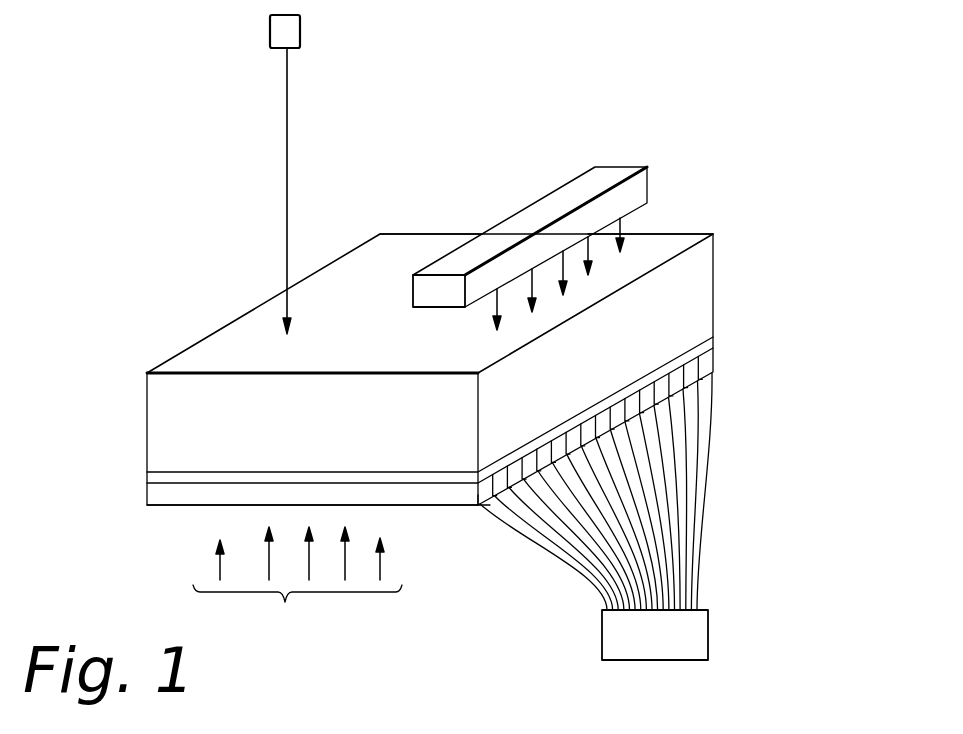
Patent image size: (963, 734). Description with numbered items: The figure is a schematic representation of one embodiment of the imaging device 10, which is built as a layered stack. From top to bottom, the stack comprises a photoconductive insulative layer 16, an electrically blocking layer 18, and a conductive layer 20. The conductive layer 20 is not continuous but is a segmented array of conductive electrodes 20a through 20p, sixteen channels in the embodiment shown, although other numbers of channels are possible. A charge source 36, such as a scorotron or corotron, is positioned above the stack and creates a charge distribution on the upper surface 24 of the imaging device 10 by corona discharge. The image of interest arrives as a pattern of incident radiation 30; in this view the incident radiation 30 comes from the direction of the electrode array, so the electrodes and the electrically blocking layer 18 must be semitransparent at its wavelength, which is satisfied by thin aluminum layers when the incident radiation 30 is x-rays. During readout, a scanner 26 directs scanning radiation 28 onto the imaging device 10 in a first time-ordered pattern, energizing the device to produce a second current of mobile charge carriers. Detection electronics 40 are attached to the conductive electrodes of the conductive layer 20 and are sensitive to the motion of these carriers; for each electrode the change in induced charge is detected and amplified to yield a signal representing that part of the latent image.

The imaging device 10 is at (772, 182).
The photoconductive insulative layer 16 is at (712, 272).
The electrically blocking layer 18 is at (713, 340).
The conductive layer 20 is at (172, 500).
The conductive electrode 20a is at (480, 492).
The conductive electrode 20p is at (713, 358).
The upper surface 24 is at (200, 362).
The scanner 26 is at (300, 31).
The scanning radiation 28 is at (287, 88).
The incident radiation 30 is at (297, 586).
The charge source 36 is at (638, 187).
The detection electronics 40 is at (630, 660).